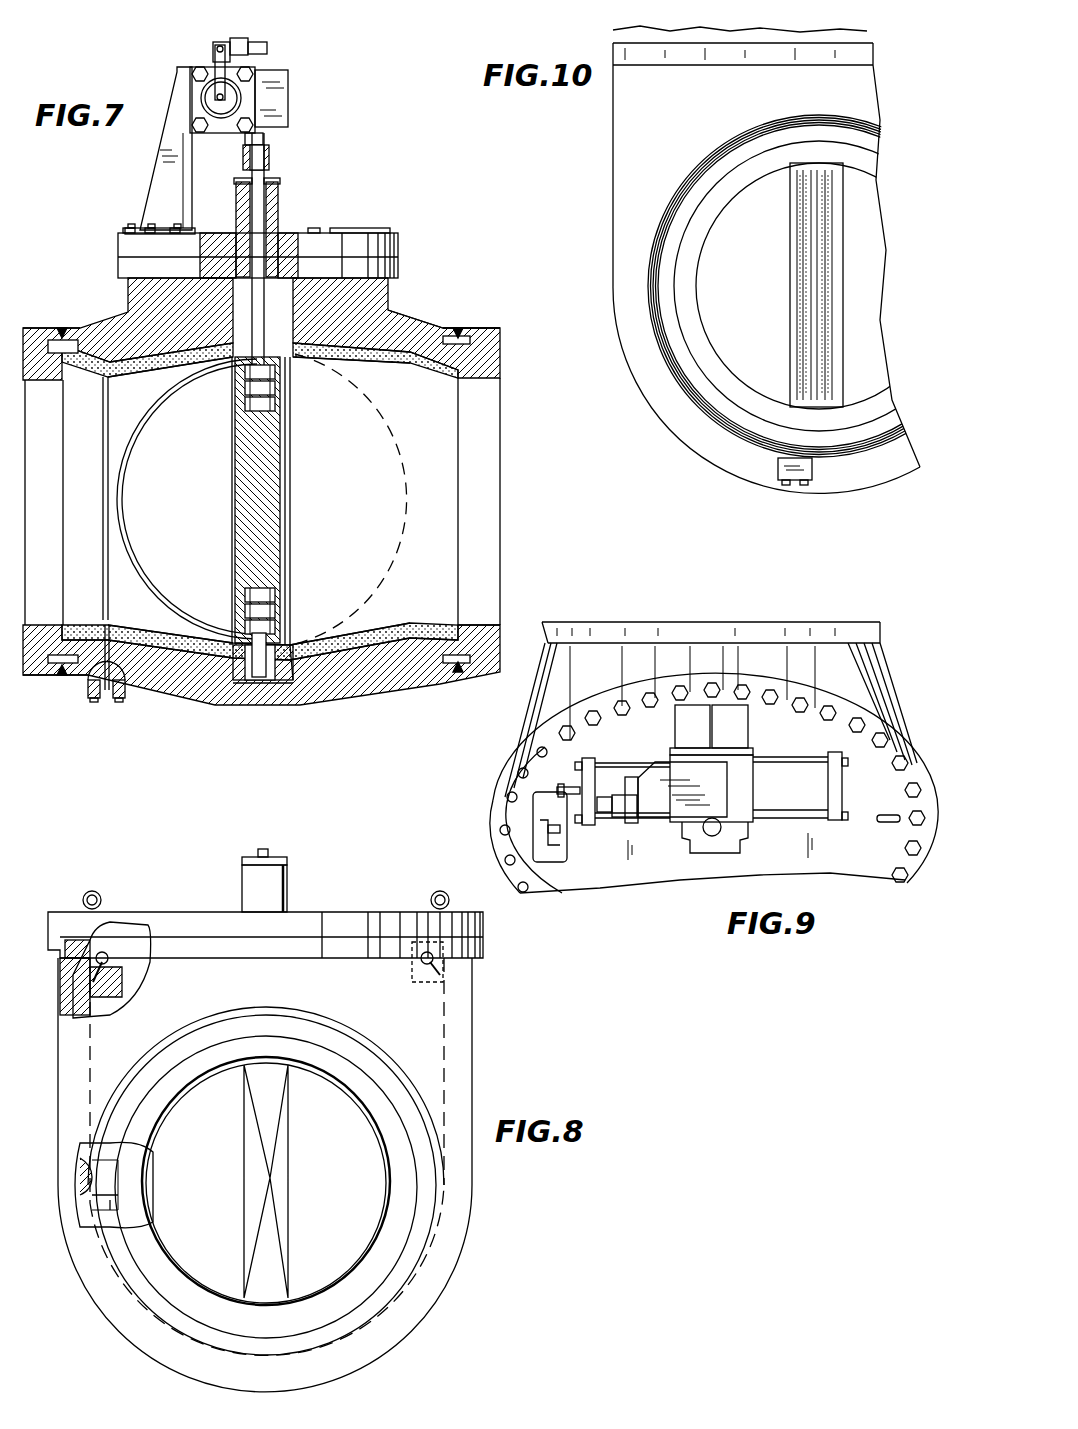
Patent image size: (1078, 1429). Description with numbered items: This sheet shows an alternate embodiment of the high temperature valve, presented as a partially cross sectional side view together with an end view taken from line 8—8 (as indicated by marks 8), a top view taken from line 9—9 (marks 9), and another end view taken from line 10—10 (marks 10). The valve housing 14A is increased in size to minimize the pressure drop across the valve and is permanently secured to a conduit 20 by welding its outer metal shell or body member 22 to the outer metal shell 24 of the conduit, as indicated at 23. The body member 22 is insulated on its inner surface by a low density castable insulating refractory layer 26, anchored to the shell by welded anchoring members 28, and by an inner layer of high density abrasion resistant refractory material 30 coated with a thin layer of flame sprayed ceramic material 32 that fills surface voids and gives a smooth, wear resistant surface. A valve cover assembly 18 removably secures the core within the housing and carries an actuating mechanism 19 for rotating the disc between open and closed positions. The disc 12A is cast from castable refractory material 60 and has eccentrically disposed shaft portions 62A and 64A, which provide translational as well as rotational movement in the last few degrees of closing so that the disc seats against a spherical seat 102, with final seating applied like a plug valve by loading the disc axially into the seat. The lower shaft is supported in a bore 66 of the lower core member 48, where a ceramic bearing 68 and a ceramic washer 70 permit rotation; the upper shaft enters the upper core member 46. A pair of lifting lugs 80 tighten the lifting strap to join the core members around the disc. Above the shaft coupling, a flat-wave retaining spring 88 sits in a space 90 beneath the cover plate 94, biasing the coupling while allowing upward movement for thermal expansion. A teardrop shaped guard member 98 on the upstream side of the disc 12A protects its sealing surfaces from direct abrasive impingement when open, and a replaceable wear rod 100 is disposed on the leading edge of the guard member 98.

In FIG. 7, the section line 8— 8 is at (492, 233).
In FIG. 7, the section line 9— 9 is at (216, 28).
In FIG. 7, the section line 10— 10 is at (62, 260).
In FIG. 7, the disc 12A is at (290, 556).
In FIG. 8, the disc 12A is at (285, 1202).
In FIG. 7, the valve housing 14A is at (172, 702).
In FIG. 7, the valve cover assembly 18 is at (160, 178).
In FIG. 7, the actuating mechanism 19 is at (274, 104).
In FIG. 7, the conduit 20 is at (496, 320).
In FIG. 7, the outer metal shell or body member 22 is at (402, 322).
In FIG. 7, the weld 23 is at (458, 325).
In FIG. 7, the outer metal shell 24 is at (468, 328).
In FIG. 7, the insulating refractory layer 26 is at (432, 360).
In FIG. 7, the anchoring members 28 is at (375, 296).
In FIG. 7, the abrasion resistant refractory material 30 is at (502, 365).
In FIG. 7, the flame sprayed ceramic material 32 is at (450, 384).
In FIG. 8, the upper core member 46 is at (120, 1155).
In FIG. 8, the lower core member 48 is at (118, 1197).
In FIG. 7, the castable refractory material 60 is at (265, 492).
In FIG. 7, the upper shaft portion 62A is at (273, 372).
In FIG. 7, the lower shaft portion 64A is at (275, 612).
In FIG. 7, the bore 66 is at (260, 677).
In FIG. 7, the ceramic bearing 68 is at (270, 690).
In FIG. 7, the ceramic washer 70 is at (290, 655).
In FIG. 8, the lifting lugs 80 is at (110, 956).
In FIG. 7, the flat-wave retaining spring 88 is at (283, 232).
In FIG. 7, the space 90 is at (236, 238).
In FIG. 7, the cover plate 94 is at (336, 246).
In FIG. 9, the cover plate 94 is at (498, 802).
In FIG. 7, the guard member 98 is at (107, 610).
In FIG. 10, the guard member 98 is at (836, 390).
In FIG. 10, the wear rod 100 is at (816, 392).
In FIG. 7, the spherical seat 102 is at (235, 688).